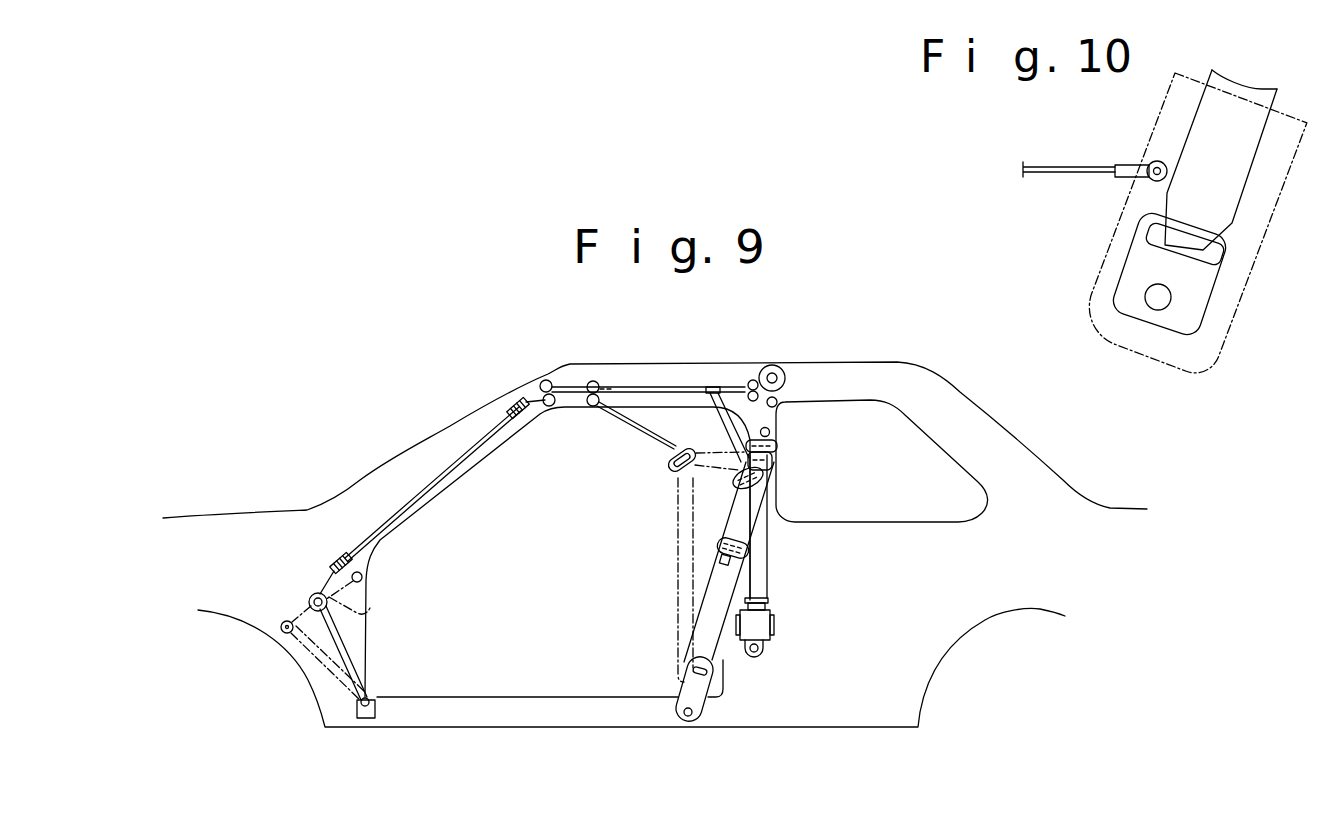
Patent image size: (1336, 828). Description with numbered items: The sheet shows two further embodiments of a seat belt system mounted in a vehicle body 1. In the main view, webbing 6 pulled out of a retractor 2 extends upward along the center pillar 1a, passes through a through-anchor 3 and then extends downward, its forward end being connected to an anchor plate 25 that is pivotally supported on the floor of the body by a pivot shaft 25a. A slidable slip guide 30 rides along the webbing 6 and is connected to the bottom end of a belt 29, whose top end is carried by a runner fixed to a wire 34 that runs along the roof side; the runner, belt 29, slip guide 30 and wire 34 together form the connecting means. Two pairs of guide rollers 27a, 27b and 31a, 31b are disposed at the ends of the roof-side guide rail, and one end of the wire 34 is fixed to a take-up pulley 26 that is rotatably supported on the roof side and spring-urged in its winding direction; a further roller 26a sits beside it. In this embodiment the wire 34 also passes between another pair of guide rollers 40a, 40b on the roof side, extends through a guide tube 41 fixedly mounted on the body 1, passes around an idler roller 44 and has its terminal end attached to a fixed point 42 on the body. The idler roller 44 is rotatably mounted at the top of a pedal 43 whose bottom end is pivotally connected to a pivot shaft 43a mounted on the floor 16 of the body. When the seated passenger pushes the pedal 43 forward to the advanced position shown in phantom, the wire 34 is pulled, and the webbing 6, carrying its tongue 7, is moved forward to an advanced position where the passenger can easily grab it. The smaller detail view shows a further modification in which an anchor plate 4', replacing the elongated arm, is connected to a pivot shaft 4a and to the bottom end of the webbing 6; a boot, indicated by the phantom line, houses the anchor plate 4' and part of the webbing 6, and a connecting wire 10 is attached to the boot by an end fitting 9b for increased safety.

In FIG. 9, the body 1 is at (421, 433).
In FIG. 9, the center pillar 1a is at (772, 463).
In FIG. 9, the retractor 2 is at (762, 622).
In FIG. 9, the through-anchor 3 is at (777, 447).
In FIG. 10, the anchor plate 4' is at (1196, 274).
In FIG. 10, the pivot shaft 4a is at (1152, 302).
In FIG. 9, the webbing 6 is at (762, 537).
In FIG. 10, the webbing 6 is at (1268, 100).
In FIG. 9, the tongue 7 is at (740, 560).
In FIG. 10, the end fitting 9b is at (1124, 165).
In FIG. 10, the connecting wire 10 is at (1066, 166).
In FIG. 9, the floor / sill 16 is at (478, 728).
In FIG. 9, the anchor plate 25 is at (700, 688).
In FIG. 9, the pivot shaft 25a is at (690, 717).
In FIG. 9, the take-up pulley 26 is at (781, 368).
In FIG. 9, the guide roller 26a is at (778, 402).
In FIG. 9, the guide roller 27a is at (753, 380).
In FIG. 9, the guide roller 27b is at (747, 393).
In FIG. 9, the belt 29 is at (727, 422).
In FIG. 9, the slip guide 30 is at (733, 481).
In FIG. 9, the guide roller 31a is at (596, 381).
In FIG. 9, the guide roller 31b is at (595, 407).
In FIG. 9, the wire 34 is at (573, 385).
In FIG. 9, the guide roller 40a is at (542, 382).
In FIG. 9, the guide roller 40b is at (549, 407).
In FIG. 9, the guide tube 41 is at (460, 455).
In FIG. 9, the fixed point 42 is at (363, 577).
In FIG. 9, the pedal 43 is at (352, 650).
In FIG. 9, the pivot shaft 43a is at (373, 696).
In FIG. 9, the idler roller 44 is at (311, 596).